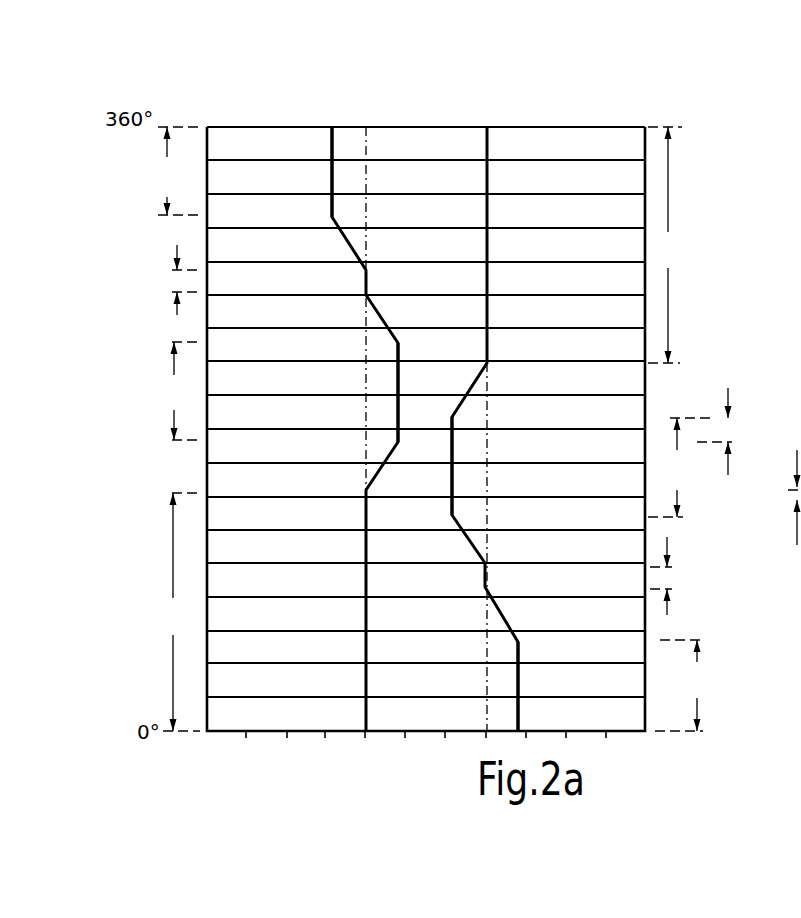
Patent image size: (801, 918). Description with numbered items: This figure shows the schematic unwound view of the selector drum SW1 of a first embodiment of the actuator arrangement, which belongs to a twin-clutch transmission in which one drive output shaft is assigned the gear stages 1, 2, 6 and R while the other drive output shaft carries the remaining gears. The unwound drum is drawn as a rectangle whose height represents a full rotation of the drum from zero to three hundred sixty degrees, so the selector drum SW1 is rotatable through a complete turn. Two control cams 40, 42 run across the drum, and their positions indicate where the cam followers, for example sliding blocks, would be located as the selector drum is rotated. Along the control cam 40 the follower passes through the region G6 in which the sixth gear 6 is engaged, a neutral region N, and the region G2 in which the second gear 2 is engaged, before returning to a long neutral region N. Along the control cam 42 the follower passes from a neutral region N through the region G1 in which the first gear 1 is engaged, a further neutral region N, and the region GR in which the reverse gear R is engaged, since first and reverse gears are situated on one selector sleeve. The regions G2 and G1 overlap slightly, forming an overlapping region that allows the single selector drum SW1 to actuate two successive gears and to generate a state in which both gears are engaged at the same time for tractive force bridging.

The control cam 40 is at (336, 143).
The control cam 42 is at (485, 147).
The selector drum SW1 is at (578, 115).
The gear stage 6 is at (318, 172).
The gear stage 2 is at (407, 392).
The gear stage 1 is at (439, 466).
The gear stage R is at (527, 686).
The engagement region G6 is at (176, 171).
The engagement region G2 is at (183, 391).
The engagement region G1 is at (680, 467).
The engagement region GR is at (704, 685).
The neutral region N is at (418, 429).